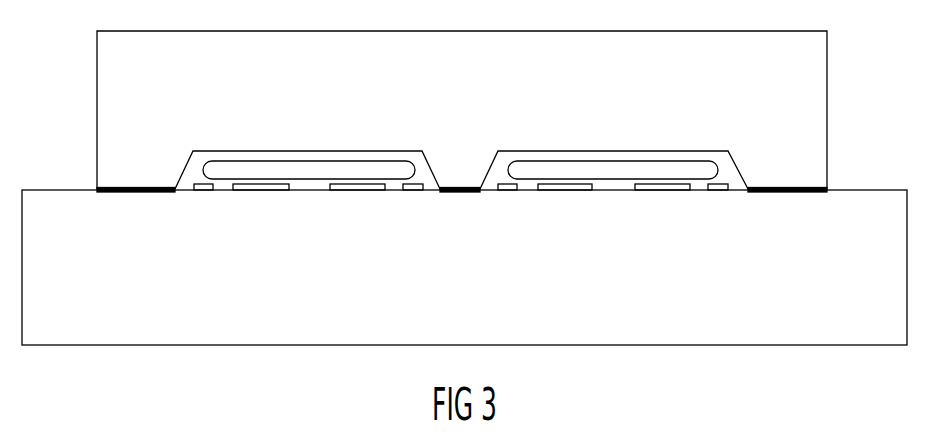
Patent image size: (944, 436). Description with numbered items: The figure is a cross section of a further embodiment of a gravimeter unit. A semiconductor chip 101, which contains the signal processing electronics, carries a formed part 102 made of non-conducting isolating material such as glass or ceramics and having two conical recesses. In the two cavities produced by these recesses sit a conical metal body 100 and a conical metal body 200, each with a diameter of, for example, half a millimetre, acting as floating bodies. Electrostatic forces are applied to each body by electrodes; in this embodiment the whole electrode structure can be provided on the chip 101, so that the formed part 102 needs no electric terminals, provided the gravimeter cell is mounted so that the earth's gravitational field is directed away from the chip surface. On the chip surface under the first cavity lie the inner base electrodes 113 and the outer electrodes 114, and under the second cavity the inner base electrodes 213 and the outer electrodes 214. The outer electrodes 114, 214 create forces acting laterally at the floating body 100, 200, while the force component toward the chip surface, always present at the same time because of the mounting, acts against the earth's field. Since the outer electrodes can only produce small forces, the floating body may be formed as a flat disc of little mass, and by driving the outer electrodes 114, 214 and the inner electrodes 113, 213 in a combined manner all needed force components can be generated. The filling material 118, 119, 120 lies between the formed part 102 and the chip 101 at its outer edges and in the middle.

The conical metal body 100 is at (318, 168).
The semiconductor chip 101 is at (640, 333).
The formed part 102 is at (818, 100).
The base electrodes 113 is at (258, 191).
The outer electrodes 114 is at (205, 191).
The filling material 118 is at (128, 192).
The filling material 119 is at (457, 192).
The filling material 120 is at (788, 192).
The conical metal body 200 is at (617, 167).
The base electrodes 213 is at (565, 191).
The outer electrodes 214 is at (507, 191).